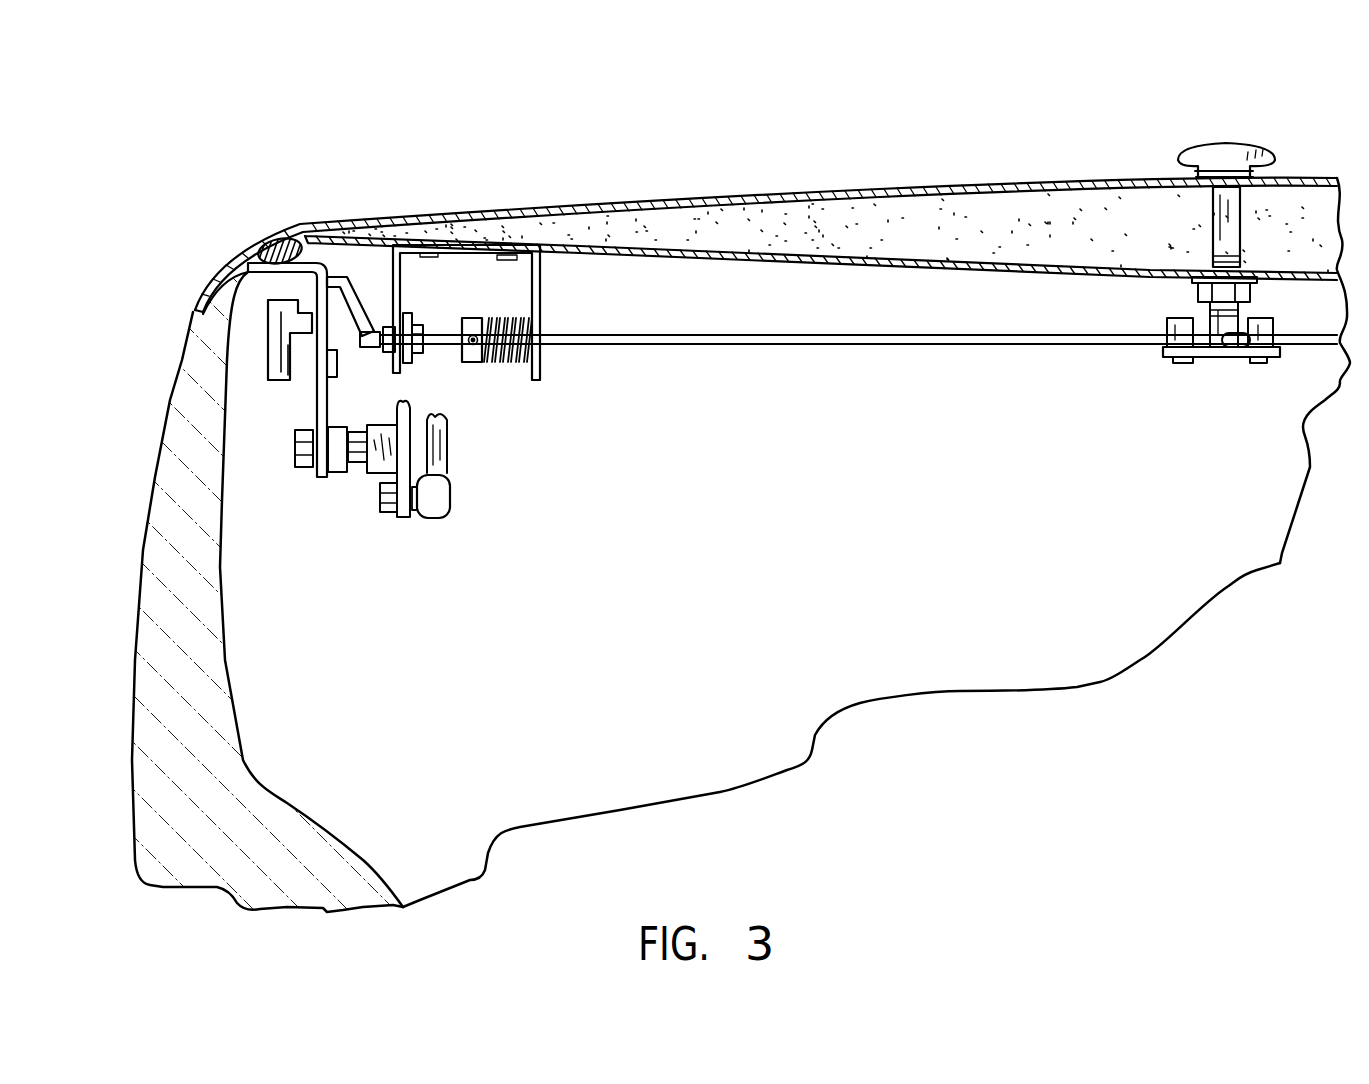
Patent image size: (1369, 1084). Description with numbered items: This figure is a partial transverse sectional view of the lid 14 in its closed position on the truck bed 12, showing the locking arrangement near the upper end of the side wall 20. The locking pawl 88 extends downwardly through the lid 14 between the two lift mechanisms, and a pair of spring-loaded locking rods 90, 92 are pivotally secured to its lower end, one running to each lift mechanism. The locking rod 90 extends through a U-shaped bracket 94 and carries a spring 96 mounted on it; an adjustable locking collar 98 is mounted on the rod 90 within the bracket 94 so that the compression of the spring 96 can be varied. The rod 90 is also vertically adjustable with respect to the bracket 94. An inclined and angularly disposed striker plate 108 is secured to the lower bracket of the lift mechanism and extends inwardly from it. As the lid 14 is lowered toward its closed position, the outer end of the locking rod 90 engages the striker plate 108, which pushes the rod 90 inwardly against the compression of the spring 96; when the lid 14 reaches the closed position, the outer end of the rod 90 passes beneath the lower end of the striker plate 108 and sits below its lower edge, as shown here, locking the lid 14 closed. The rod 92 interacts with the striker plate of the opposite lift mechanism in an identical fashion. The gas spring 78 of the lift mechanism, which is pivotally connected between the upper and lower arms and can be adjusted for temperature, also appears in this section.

The bed 12 is at (137, 333).
The lid 14 is at (992, 160).
The side wall 20 is at (232, 628).
The gas spring 78 is at (487, 458).
The locking pawl 88 is at (1275, 165).
The locking rod 90 is at (1005, 342).
The locking rod 92 is at (1320, 345).
The U-shaped bracket 94 is at (565, 290).
The spring 96 is at (513, 360).
The adjustable locking collar 98 is at (473, 315).
The striker plate 108 is at (365, 292).